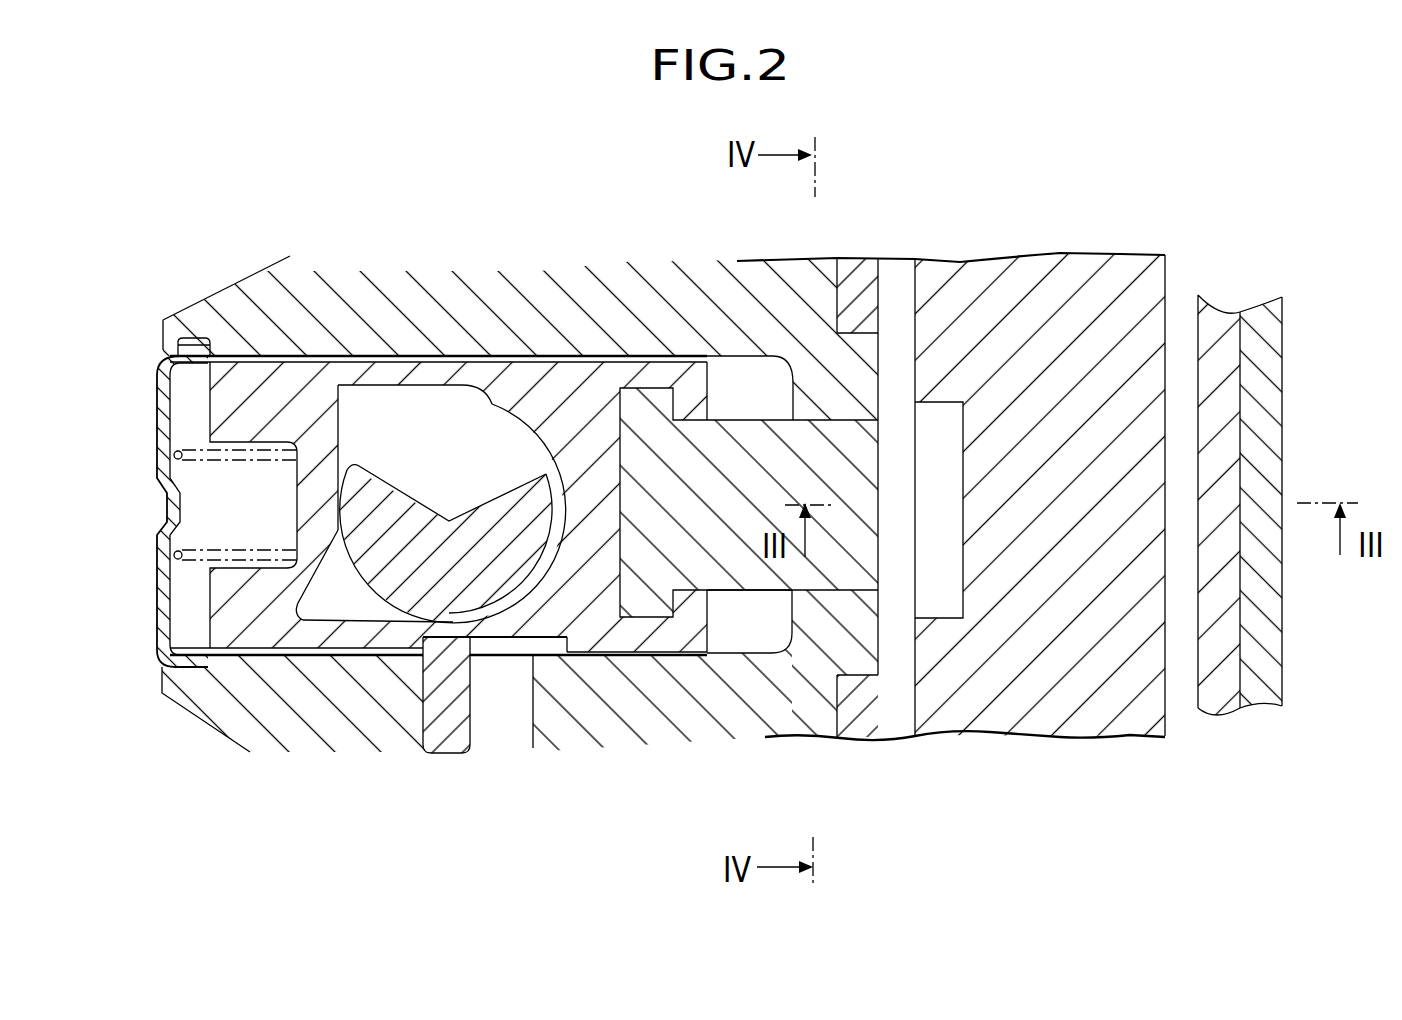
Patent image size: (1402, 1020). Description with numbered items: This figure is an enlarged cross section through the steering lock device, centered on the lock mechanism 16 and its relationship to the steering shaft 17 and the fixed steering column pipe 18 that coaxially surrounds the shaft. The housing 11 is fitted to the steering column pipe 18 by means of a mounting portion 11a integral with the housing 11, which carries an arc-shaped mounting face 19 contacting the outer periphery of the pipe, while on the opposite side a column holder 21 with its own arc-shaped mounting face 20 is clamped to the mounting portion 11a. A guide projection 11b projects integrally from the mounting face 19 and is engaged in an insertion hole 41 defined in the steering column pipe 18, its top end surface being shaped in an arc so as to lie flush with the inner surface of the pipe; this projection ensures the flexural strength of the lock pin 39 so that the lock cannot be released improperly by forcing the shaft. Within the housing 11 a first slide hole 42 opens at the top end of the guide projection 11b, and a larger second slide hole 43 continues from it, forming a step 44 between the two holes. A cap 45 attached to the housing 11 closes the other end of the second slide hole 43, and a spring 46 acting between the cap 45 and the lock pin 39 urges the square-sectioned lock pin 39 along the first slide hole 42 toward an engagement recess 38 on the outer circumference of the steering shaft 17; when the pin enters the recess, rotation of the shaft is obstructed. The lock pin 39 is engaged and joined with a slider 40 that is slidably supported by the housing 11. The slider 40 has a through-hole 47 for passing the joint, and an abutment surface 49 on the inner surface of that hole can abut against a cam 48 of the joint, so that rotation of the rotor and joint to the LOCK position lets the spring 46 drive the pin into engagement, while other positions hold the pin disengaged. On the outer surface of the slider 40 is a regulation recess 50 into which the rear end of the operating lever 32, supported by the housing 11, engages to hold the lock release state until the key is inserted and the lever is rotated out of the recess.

The housing 11 is at (258, 300).
The mounting portion 11a is at (807, 287).
The guide projection 11b is at (883, 673).
The lock mechanism 16 is at (403, 340).
The steering shaft 17 is at (1067, 507).
The steering column pipe 18 is at (1220, 587).
The mounting face 19 is at (873, 655).
The mounting face 20 is at (1242, 448).
The column holder 21 is at (1263, 398).
The operating lever 32 is at (428, 753).
The engagement recess 38 is at (963, 422).
The lock pin 39 is at (850, 498).
The slider 40 is at (345, 633).
The insertion hole 41 is at (867, 340).
The first slide hole 42 is at (812, 592).
The second slide hole 43 is at (605, 380).
The step 44 is at (792, 632).
The cap 45 is at (167, 597).
The spring 46 is at (177, 450).
The through-hole 47 is at (480, 413).
The cam 48 is at (397, 500).
The abutment surface 49 is at (362, 470).
The regulation recess 50 is at (550, 657).